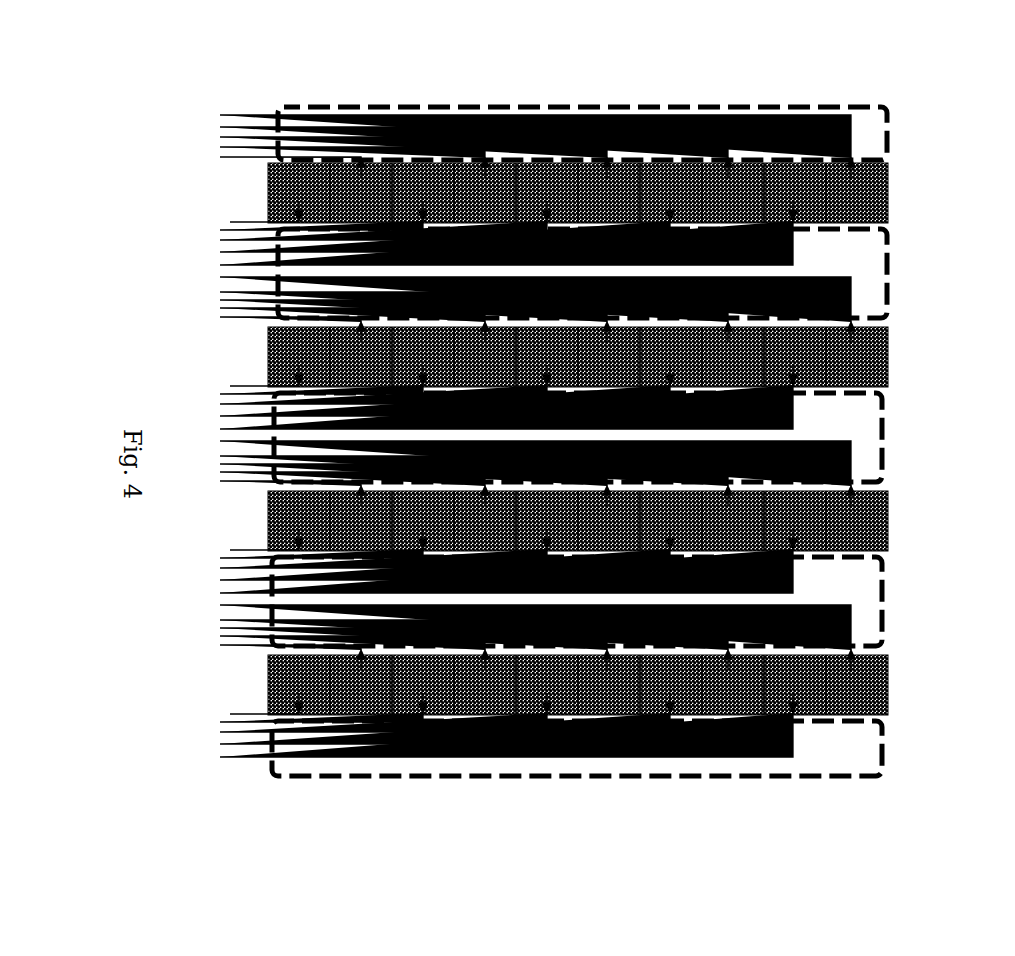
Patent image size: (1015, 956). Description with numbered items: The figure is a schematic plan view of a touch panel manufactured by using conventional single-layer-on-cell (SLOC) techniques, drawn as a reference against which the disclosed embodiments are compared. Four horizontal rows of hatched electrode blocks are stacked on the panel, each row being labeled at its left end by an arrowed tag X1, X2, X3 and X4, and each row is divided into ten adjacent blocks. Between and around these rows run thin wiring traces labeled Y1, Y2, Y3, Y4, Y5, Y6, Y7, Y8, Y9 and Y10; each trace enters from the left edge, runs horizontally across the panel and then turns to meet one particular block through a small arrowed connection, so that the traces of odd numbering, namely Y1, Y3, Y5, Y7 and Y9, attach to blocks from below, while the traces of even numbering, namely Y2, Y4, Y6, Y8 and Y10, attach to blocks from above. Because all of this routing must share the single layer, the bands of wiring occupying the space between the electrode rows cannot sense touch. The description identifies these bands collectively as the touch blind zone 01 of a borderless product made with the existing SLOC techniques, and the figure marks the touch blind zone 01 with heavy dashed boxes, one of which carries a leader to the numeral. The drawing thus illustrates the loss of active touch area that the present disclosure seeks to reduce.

The touch blind zone 01 is at (889, 284).
The first row electrode X1 is at (268, 193).
The second row electrode X2 is at (268, 357).
The third row electrode X3 is at (268, 521).
The fourth row electrode X4 is at (268, 685).
The signal line Y1 is at (251, 465).
The signal line Y2 is at (282, 400).
The signal line Y3 is at (313, 476).
The signal line Y4 is at (352, 398).
The signal line Y5 is at (383, 476).
The signal line Y6 is at (413, 393).
The signal line Y7 is at (445, 482).
The signal line Y8 is at (474, 388).
The signal line Y9 is at (498, 493).
The signal line Y10 is at (523, 377).